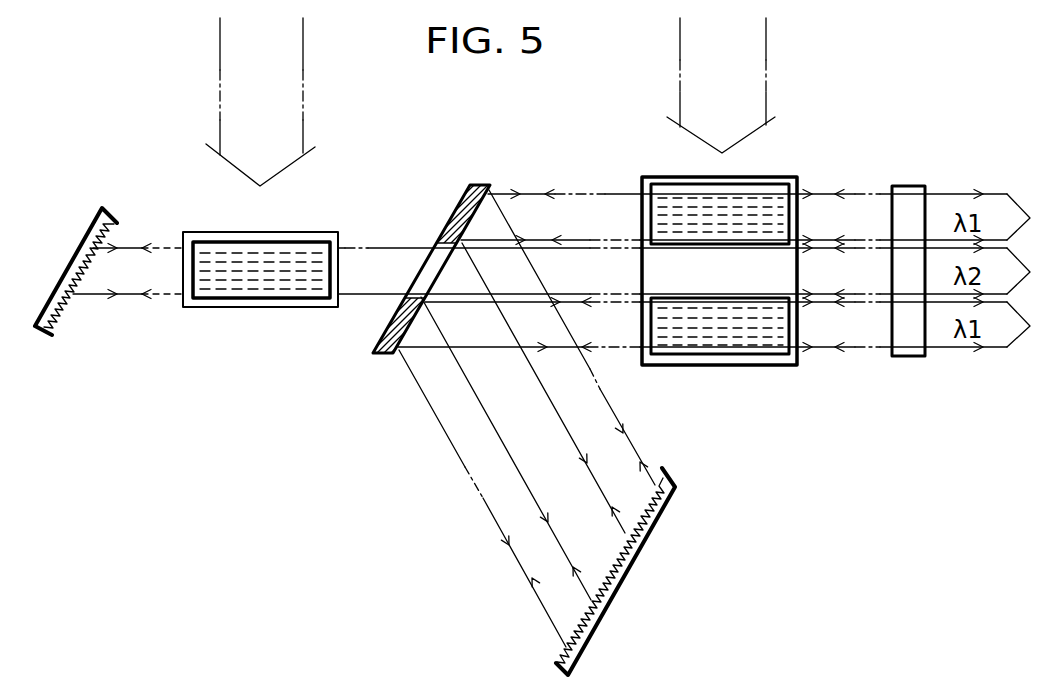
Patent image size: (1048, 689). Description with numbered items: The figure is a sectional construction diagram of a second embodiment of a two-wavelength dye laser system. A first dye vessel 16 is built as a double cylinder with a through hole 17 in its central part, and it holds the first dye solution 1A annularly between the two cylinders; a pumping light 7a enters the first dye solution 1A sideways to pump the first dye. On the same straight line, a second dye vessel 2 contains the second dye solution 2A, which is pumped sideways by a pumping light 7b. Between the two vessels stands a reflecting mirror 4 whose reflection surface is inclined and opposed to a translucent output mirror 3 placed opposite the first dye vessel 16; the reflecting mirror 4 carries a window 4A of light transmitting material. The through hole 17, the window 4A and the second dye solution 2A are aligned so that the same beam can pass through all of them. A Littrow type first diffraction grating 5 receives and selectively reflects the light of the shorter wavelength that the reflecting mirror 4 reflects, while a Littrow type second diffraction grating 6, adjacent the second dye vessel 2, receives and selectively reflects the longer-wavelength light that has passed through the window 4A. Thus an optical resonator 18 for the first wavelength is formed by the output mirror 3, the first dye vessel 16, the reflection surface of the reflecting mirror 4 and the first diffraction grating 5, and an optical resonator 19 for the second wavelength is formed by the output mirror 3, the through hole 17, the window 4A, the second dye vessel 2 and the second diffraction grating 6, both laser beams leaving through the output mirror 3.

The pumping light 7a is at (755, 47).
The pumping light 7b is at (230, 72).
The second wavelength selecting means 6 is at (40, 330).
The second dye vessel 2 is at (235, 302).
The second dye solution 2A is at (295, 288).
The reflecting mirror 4 is at (385, 353).
The window 4A is at (420, 280).
The first wavelength selecting means 5 is at (617, 583).
The first dye vessel 16 is at (730, 362).
The through hole 17 is at (705, 278).
The first dye solution 1A is at (763, 338).
The output mirror 3 is at (905, 356).
The optical resonator 18 is at (812, 539).
The optical resonator 19 is at (240, 458).